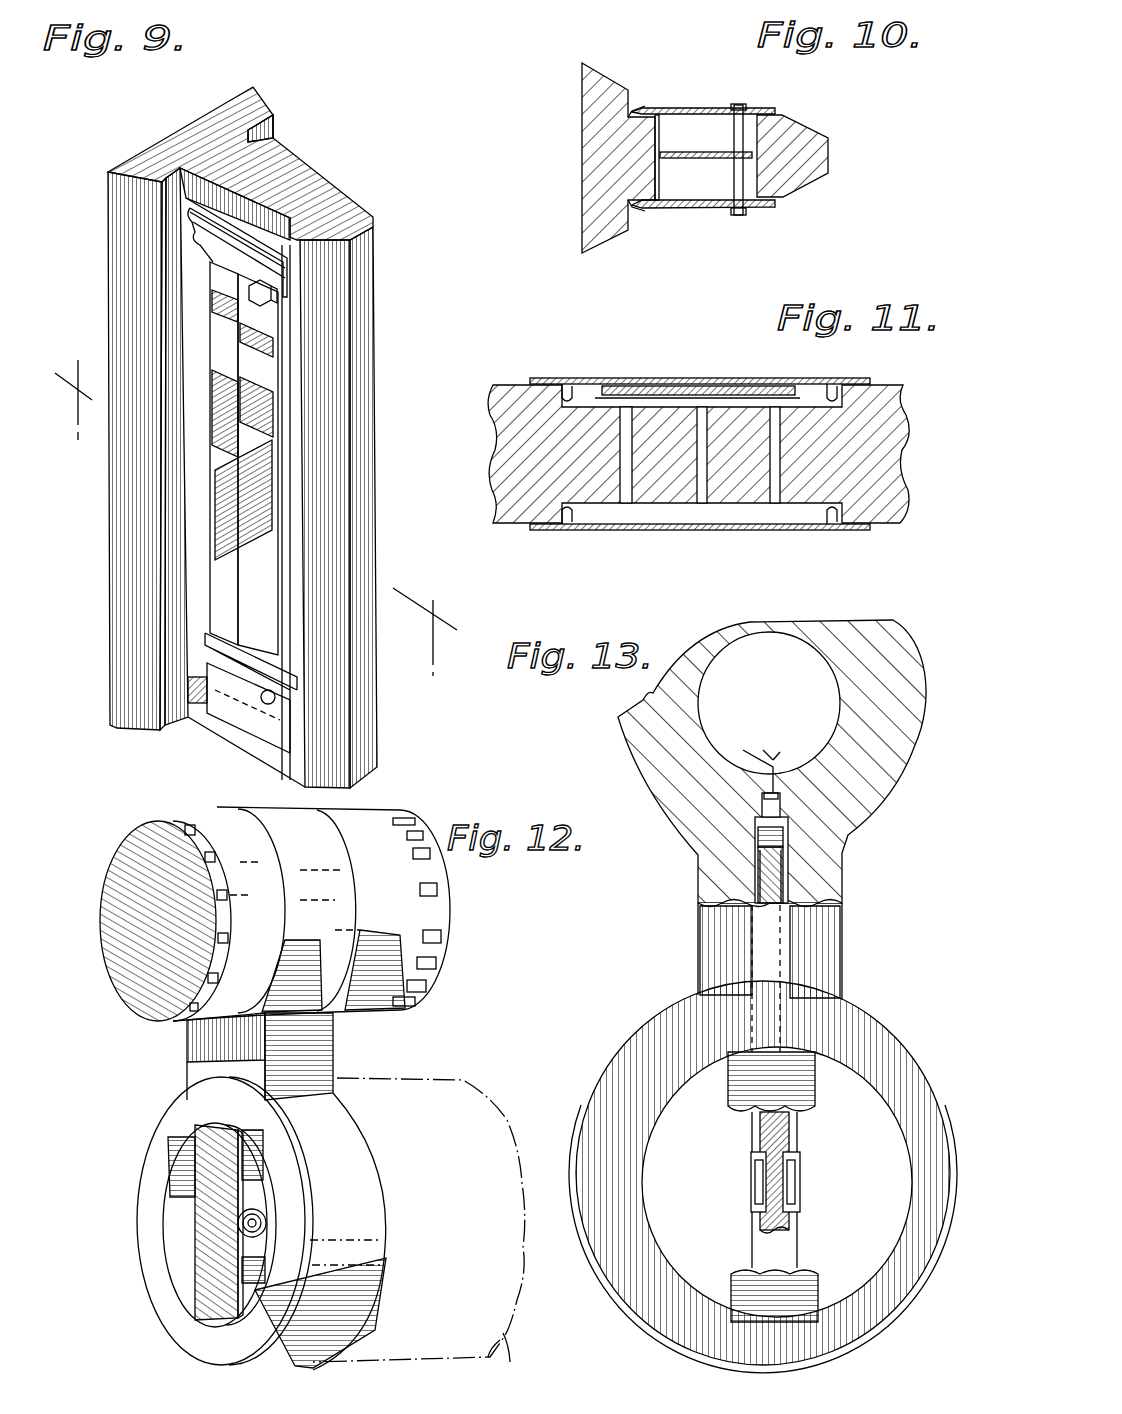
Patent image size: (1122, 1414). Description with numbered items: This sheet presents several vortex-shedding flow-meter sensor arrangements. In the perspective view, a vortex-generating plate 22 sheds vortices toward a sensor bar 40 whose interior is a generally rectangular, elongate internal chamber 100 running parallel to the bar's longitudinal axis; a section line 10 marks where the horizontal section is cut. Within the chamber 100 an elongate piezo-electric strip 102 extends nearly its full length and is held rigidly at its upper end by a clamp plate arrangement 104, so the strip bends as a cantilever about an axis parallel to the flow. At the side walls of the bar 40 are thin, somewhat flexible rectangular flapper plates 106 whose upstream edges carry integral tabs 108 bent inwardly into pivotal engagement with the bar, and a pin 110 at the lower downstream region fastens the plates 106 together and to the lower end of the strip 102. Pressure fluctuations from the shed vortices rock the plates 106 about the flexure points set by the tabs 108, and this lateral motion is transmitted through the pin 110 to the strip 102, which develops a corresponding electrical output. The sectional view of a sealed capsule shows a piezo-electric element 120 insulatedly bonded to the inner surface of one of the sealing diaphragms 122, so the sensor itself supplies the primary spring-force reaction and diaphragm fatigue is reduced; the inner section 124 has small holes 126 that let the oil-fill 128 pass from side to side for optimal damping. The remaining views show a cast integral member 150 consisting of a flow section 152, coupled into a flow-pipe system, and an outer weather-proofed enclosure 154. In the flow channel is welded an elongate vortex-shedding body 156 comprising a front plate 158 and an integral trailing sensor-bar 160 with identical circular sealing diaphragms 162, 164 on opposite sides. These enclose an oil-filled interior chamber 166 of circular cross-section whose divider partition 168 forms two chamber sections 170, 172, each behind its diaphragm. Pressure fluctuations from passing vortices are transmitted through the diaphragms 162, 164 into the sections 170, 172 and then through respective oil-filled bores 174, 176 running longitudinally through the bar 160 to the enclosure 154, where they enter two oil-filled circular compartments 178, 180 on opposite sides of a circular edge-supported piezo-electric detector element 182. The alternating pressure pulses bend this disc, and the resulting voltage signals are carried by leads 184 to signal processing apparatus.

In FIG. 9, the section line 10 is at (103, 371).
In FIG. 9, the vortex-generating plate 22 is at (202, 123).
In FIG. 10, the vortex-generating plate 22 is at (593, 132).
In FIG. 9, the sensor bar 40 is at (293, 167).
In FIG. 10, the sensor bar 40 is at (805, 135).
In FIG. 9, the internal chamber 100 is at (227, 475).
In FIG. 10, the internal chamber 100 is at (658, 185).
In FIG. 9, the piezo-electric strip 102 is at (267, 417).
In FIG. 10, the piezo-electric strip 102 is at (667, 160).
In FIG. 9, the clamp plate arrangement 104 is at (240, 285).
In FIG. 9, the flapper plates 106 is at (362, 185).
In FIG. 10, the flapper plates 106 is at (688, 108).
In FIG. 9, the tabs 108 is at (193, 193).
In FIG. 10, the tabs 108 is at (637, 108).
In FIG. 9, the pin 110 is at (267, 702).
In FIG. 10, the pin 110 is at (743, 123).
In FIG. 11, the piezo-electric element 120 is at (662, 382).
In FIG. 11, the sealing diaphragms 122 is at (710, 380).
In FIG. 11, the inner section 124 is at (673, 483).
In FIG. 11, the small holes 126 is at (760, 480).
In FIG. 11, the oil-fill 128 is at (628, 517).
In FIG. 12, the cast integral member 150 is at (358, 1037).
In FIG. 13, the cast integral member 150 is at (619, 755).
In FIG. 12, the flow section 152 is at (337, 1153).
In FIG. 12, the outer enclosure 154 is at (353, 833).
In FIG. 13, the outer enclosure 154 is at (913, 657).
In FIG. 12, the vortex-shedding body 156 is at (175, 1172).
In FIG. 12, the front plate 158 is at (207, 1253).
In FIG. 12, the sensor-bar 160 is at (253, 1272).
In FIG. 13, the sensor-bar 160 is at (735, 1075).
In FIG. 13, the sealing diaphragm 162 is at (753, 1183).
In FIG. 12, the sealing diaphragm 164 is at (256, 1223).
In FIG. 13, the sealing diaphragm 164 is at (795, 1195).
In FIG. 13, the oil-filled interior chamber 166 is at (745, 1205).
In FIG. 13, the divider partition 168 is at (775, 1195).
In FIG. 13, the chamber section 170 is at (752, 1163).
In FIG. 13, the chamber section 172 is at (798, 1168).
In FIG. 13, the oil-filled bore 174 is at (755, 872).
In FIG. 13, the oil-filled bore 176 is at (788, 873).
In FIG. 13, the oil-filled circular compartment 178 is at (737, 777).
In FIG. 13, the oil-filled circular compartment 180 is at (780, 800).
In FIG. 13, the piezo-electric detector element 182 is at (780, 810).
In FIG. 13, the leads 184 is at (770, 740).